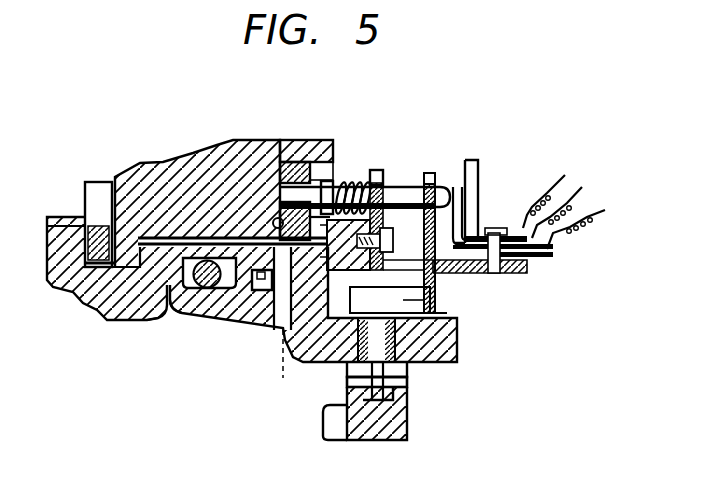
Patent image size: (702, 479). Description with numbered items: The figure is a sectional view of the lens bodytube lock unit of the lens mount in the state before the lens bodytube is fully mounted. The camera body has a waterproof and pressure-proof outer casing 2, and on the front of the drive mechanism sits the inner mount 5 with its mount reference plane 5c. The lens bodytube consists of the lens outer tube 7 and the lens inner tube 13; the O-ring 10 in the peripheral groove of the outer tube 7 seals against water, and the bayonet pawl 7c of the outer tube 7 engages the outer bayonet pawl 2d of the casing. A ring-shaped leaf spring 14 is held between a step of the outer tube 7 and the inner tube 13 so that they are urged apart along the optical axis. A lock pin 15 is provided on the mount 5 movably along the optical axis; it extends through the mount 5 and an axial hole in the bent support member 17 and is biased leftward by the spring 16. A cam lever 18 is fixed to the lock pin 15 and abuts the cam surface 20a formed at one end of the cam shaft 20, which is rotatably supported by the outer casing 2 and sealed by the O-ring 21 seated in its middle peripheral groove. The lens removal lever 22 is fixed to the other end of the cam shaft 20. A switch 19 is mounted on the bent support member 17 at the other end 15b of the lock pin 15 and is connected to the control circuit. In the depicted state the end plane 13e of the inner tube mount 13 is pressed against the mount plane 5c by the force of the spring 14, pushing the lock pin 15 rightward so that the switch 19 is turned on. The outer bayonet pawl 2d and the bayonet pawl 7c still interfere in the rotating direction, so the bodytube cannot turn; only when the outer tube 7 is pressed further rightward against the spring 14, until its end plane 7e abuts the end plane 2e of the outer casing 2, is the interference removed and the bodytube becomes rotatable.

The outer casing 2 is at (458, 347).
The outer bayonet pawl 2d is at (261, 293).
The end plane of the outer casing 2e is at (178, 312).
The inner mount 5 is at (300, 167).
The mount reference plane 5c is at (277, 215).
The lens outer tube 7 is at (90, 307).
The bayonet pawl 7c is at (276, 361).
The end plane of the outer tube 7e is at (160, 318).
The O-ring 10 is at (215, 291).
The lens inner tube 13 is at (145, 202).
The end plane of the mount 13e is at (272, 218).
The ring-shaped leaf spring 14 is at (75, 217).
The lock pin 15 is at (405, 193).
The other end of the lock pin 15b is at (447, 187).
The spring 16 is at (348, 182).
The support member 17 is at (373, 168).
The cam lever 18 is at (430, 173).
The switch 19 is at (480, 180).
The cam shaft 20 is at (405, 364).
The cam surface 20a is at (407, 300).
The O-ring 21 is at (345, 365).
The lens removal lever 22 is at (393, 430).